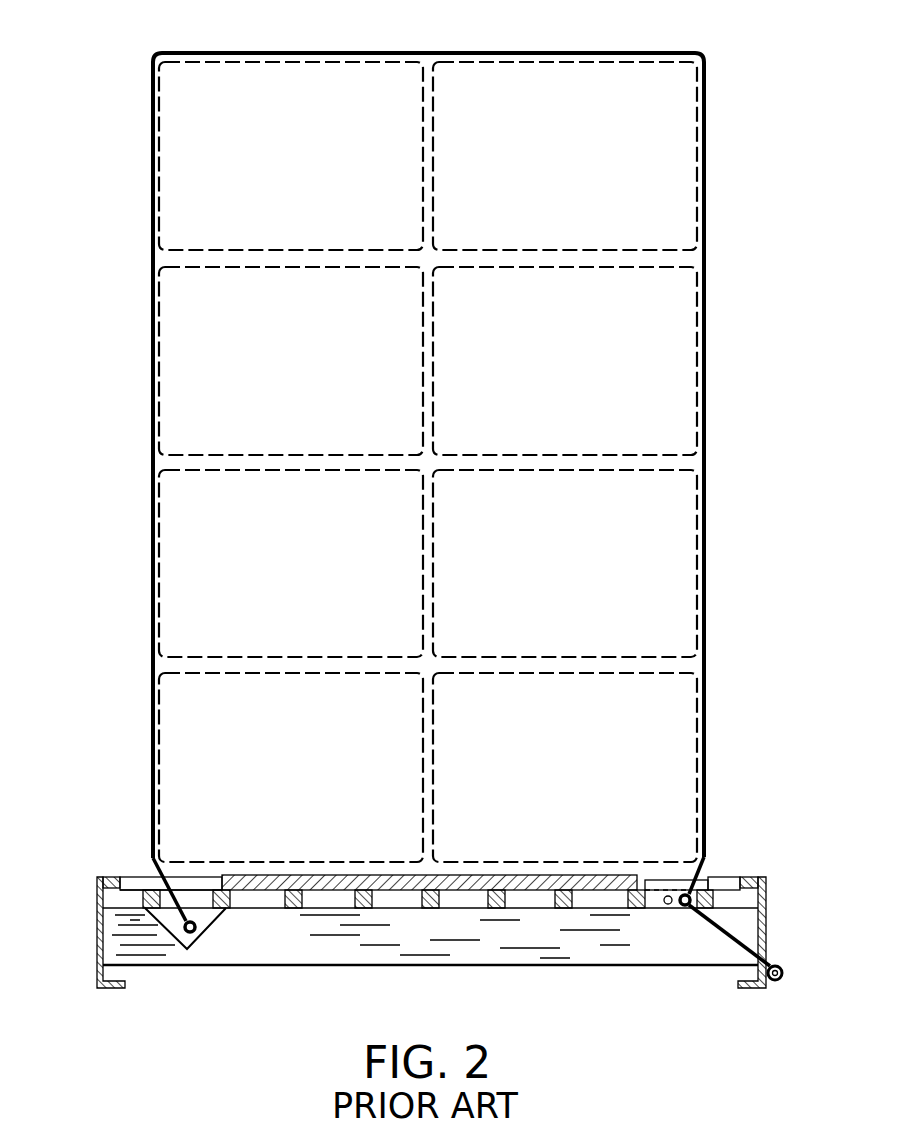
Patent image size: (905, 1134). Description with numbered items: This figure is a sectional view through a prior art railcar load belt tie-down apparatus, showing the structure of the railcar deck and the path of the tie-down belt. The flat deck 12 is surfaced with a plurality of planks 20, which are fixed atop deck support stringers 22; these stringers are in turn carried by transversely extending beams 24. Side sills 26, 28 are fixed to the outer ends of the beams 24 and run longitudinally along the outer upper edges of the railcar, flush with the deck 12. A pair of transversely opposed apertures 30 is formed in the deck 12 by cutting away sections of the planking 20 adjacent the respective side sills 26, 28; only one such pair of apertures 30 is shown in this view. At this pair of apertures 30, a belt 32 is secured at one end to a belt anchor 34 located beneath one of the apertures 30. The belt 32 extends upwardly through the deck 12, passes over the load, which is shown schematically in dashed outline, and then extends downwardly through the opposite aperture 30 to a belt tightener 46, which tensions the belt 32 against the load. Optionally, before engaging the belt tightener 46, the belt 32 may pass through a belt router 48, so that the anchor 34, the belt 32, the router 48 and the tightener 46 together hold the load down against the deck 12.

The flat deck 12 is at (490, 870).
The planks 20 is at (292, 877).
The deck support stringers 22 is at (360, 909).
The transversely extending beams 24 is at (395, 967).
The side sill 26 is at (96, 922).
The side sill 28 is at (767, 907).
The apertures 30 is at (142, 876).
The belt 32 is at (477, 53).
The belt anchor 34 is at (203, 950).
The belt tightener 46 is at (777, 990).
The belt router 48 is at (655, 914).